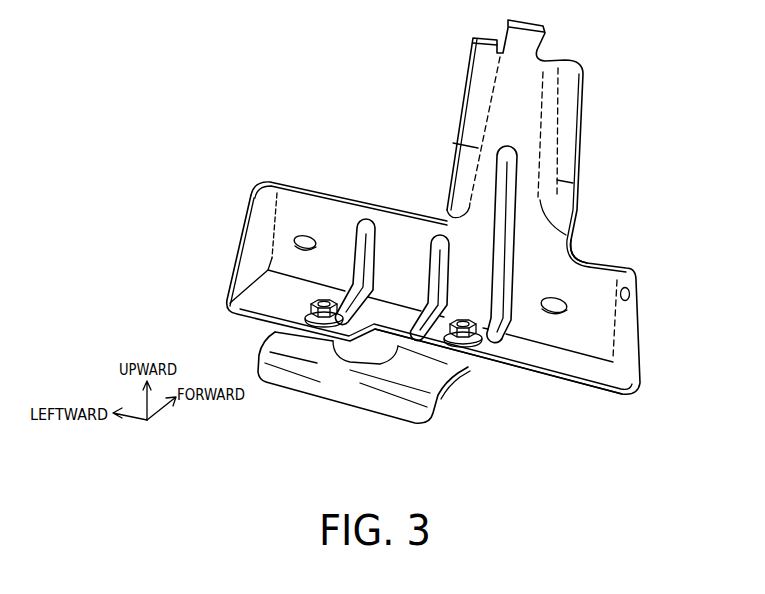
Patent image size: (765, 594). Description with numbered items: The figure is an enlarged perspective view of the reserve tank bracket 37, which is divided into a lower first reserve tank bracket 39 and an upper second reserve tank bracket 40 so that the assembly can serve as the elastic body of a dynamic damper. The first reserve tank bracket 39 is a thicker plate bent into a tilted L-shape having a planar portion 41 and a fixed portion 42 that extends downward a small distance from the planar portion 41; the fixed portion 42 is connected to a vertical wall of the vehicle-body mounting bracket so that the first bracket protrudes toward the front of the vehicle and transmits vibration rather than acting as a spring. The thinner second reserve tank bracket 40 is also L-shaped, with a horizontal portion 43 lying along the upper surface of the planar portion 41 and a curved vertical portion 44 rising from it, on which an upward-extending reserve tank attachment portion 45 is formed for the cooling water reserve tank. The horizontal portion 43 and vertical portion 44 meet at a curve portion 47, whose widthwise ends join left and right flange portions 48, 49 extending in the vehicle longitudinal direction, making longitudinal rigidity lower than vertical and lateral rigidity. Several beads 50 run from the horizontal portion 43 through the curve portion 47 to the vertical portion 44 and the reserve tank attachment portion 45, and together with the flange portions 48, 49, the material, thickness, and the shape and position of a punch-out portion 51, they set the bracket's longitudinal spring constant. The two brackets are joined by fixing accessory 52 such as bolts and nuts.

The reserve tank bracket 37 is at (237, 109).
The first reserve tank bracket 39 is at (280, 397).
The second reserve tank bracket 40 is at (237, 196).
The planar portion 41 is at (428, 378).
The fixed portion 42 is at (357, 401).
The horizontal portion 43 is at (551, 363).
The vertical portion 44 is at (585, 283).
The reserve tank attachment portion 45 is at (529, 106).
The curve portion 47 is at (521, 340).
The left flange portion 48 is at (242, 244).
The right flange portion 49 is at (628, 336).
The beads 50 is at (507, 223).
The punch-out portion 51 is at (305, 238).
The fixing accessory 52 is at (306, 317).